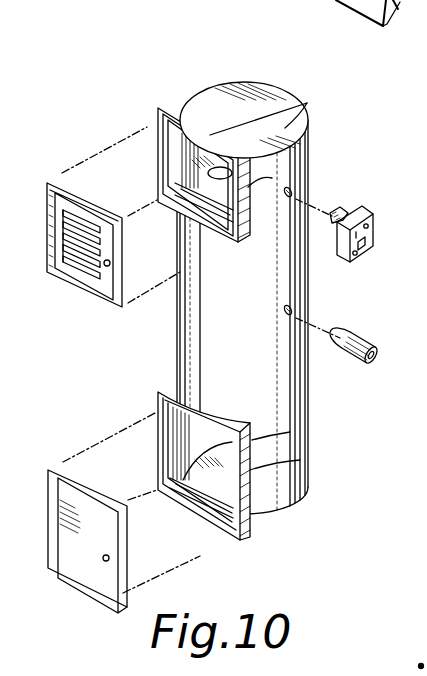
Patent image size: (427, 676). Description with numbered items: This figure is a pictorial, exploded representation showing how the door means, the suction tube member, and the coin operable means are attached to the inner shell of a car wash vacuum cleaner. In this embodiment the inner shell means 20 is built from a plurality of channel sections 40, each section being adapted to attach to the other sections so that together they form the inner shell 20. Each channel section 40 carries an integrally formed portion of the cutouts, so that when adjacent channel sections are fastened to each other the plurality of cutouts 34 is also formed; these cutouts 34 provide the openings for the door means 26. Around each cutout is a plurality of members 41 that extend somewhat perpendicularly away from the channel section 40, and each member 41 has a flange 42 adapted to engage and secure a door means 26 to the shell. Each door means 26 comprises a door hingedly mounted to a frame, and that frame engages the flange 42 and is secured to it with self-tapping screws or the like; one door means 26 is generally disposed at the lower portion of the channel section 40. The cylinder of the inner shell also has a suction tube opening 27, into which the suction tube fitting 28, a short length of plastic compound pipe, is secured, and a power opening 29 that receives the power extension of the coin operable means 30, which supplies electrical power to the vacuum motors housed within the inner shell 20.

The inner shell means 20 is at (250, 78).
The door means 26 is at (51, 178).
The suction tube opening 27 is at (293, 312).
The suction tube fitting 28 is at (358, 341).
The power opening 29 is at (293, 193).
The coin operable means 30 is at (343, 215).
The cutouts 34 is at (184, 148).
The channel section 40 is at (190, 334).
The members 41 is at (248, 187).
The flange 42 is at (238, 172).